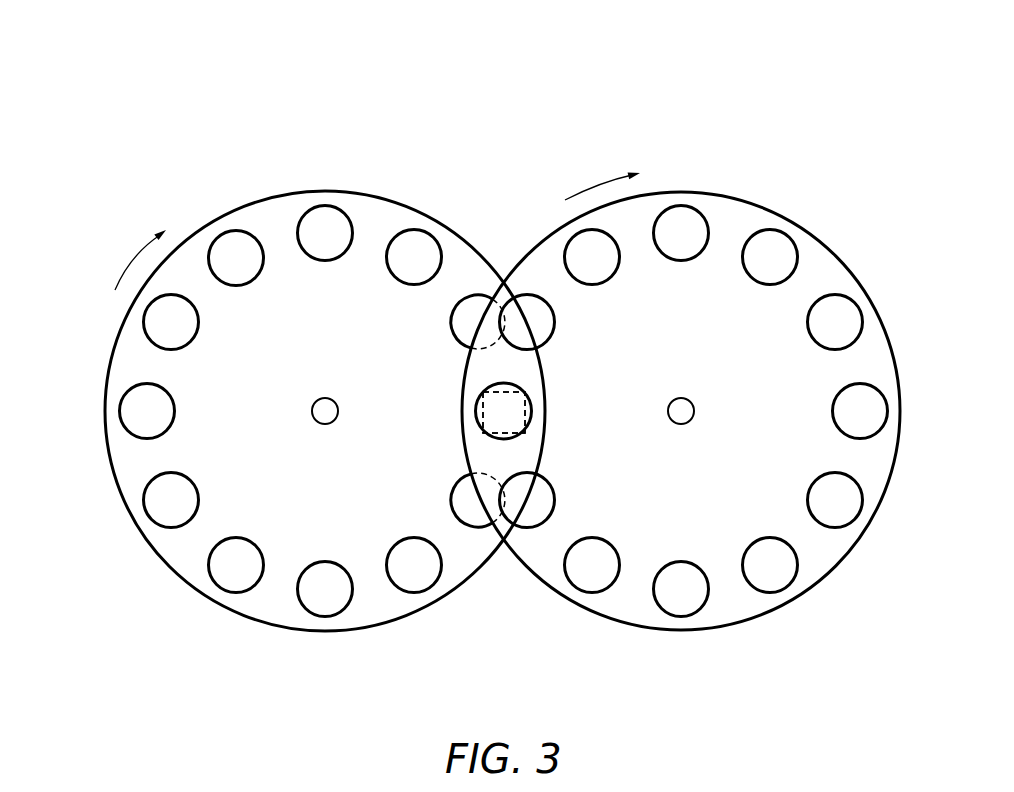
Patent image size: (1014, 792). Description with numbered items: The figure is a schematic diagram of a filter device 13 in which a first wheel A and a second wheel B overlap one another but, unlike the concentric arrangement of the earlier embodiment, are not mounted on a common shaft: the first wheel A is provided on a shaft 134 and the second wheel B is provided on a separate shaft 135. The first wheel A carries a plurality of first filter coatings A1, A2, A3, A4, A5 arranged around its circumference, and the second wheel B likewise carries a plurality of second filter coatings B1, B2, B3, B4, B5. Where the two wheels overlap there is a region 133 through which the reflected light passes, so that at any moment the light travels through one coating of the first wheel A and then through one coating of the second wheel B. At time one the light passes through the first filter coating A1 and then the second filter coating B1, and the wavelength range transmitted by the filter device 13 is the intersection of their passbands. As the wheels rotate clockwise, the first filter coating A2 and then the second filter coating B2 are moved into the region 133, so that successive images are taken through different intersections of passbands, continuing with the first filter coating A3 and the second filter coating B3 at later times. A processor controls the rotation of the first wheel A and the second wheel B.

The filter device 13 is at (879, 90).
The first wheel A is at (752, 192).
The second wheel B is at (400, 190).
The first filter coating A1 is at (531, 411).
The first filter coating A2 is at (524, 528).
The first filter coating A3 is at (591, 593).
The first filter coating A4 is at (682, 617).
The first filter coating A5 is at (772, 592).
The second filter coating B1 is at (476, 411).
The second filter coating B2 is at (451, 322).
The second filter coating B3 is at (435, 235).
The second filter coating B4 is at (325, 205).
The second filter coating B5 is at (227, 230).
The region 133 is at (482, 430).
The shaft 134 is at (315, 414).
The shaft 135 is at (690, 411).